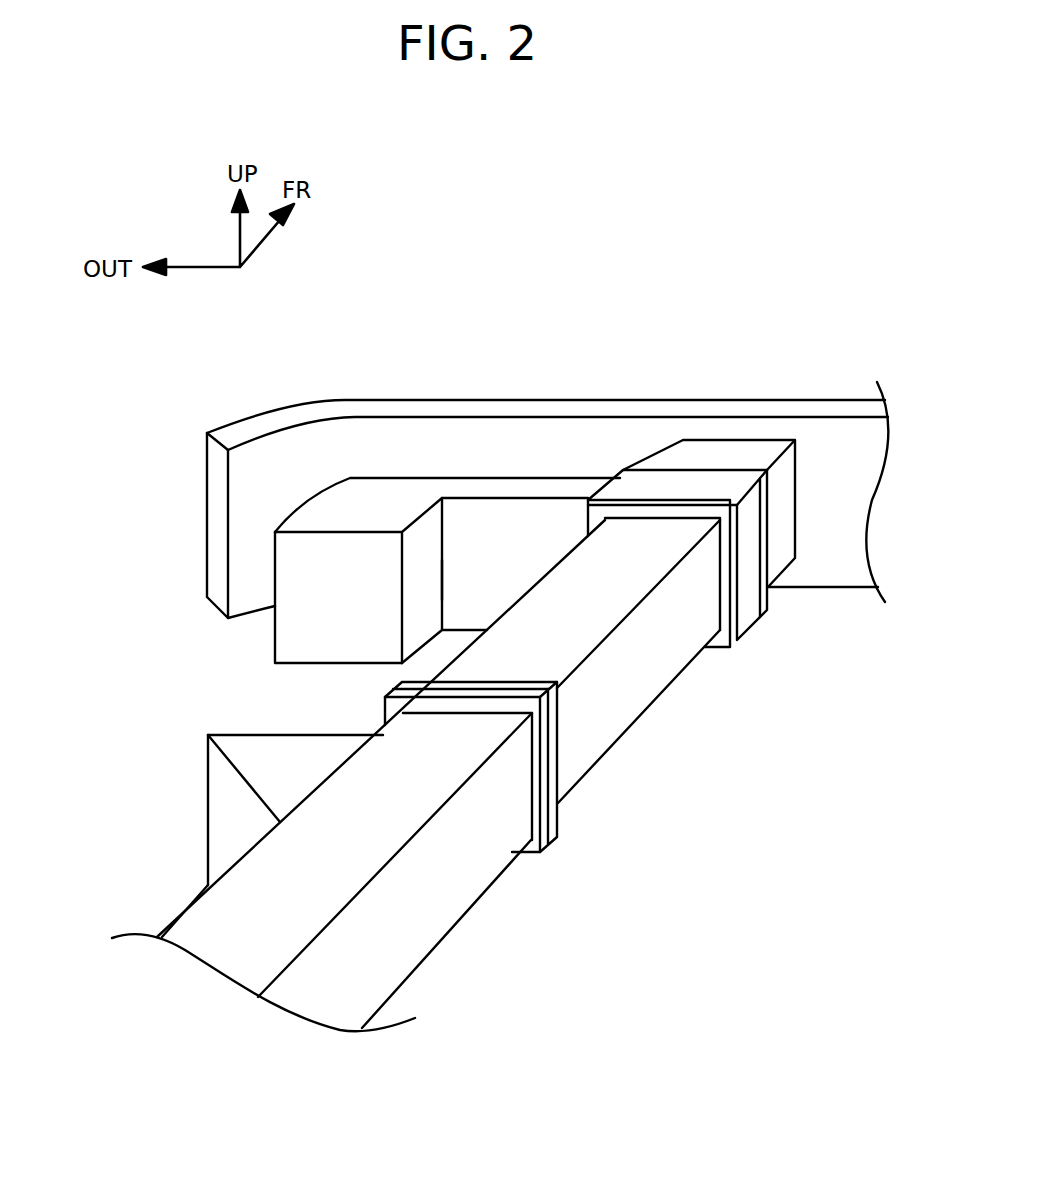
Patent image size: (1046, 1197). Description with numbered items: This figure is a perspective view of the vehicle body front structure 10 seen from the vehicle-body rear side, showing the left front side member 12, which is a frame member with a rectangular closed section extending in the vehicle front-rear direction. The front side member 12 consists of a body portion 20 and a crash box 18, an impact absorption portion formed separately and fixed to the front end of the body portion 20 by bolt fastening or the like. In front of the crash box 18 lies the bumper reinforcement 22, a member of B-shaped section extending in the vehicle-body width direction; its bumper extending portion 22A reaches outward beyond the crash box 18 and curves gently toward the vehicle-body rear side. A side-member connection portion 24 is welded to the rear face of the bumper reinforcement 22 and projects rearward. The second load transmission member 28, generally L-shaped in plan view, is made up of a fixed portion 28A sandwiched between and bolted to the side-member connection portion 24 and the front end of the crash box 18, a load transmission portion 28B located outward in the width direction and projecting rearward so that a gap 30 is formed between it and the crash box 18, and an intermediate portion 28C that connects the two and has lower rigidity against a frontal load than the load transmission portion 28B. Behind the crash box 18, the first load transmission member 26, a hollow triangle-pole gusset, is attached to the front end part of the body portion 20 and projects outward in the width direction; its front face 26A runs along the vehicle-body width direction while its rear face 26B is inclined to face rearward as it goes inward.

The vehicle body front structure 10 is at (155, 584).
The front side member 12 is at (607, 771).
The crash box 18 is at (642, 683).
The body portion 20 is at (417, 930).
The bumper reinforcement 22 is at (575, 400).
The bumper extending portion 22A is at (393, 398).
The side-member connection portion 24 is at (749, 452).
The first load transmission member 26 is at (209, 778).
The front face 26A is at (280, 733).
The rear face 26B is at (228, 823).
The second load transmission member 28 is at (346, 486).
The fixed portion 28A is at (685, 486).
The load transmission portion 28B is at (297, 637).
The intermediate portion 28C is at (505, 488).
The gap 30 is at (513, 555).